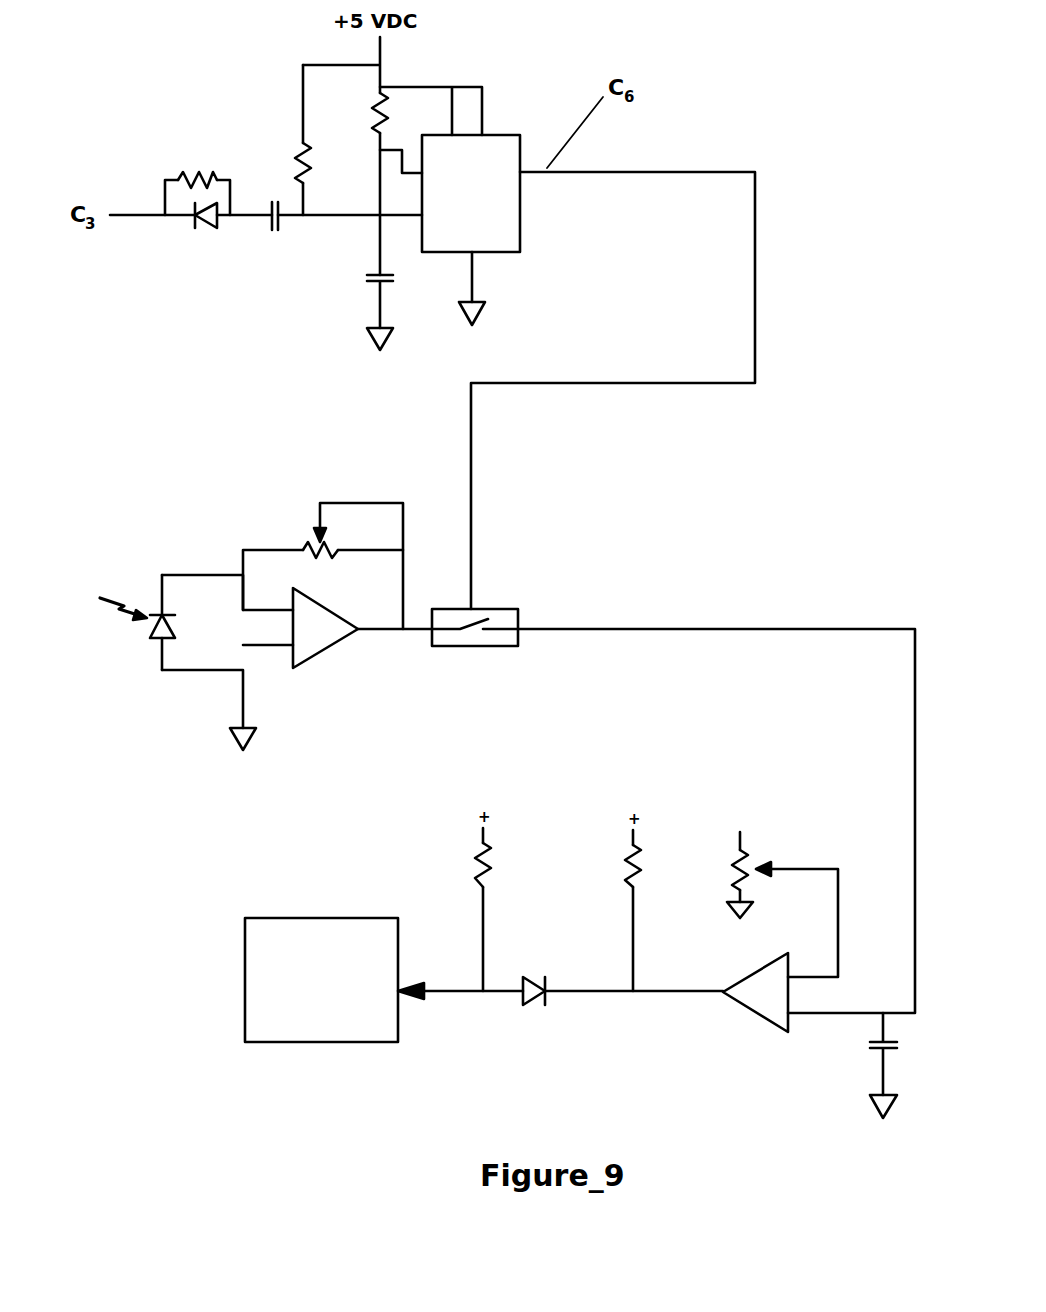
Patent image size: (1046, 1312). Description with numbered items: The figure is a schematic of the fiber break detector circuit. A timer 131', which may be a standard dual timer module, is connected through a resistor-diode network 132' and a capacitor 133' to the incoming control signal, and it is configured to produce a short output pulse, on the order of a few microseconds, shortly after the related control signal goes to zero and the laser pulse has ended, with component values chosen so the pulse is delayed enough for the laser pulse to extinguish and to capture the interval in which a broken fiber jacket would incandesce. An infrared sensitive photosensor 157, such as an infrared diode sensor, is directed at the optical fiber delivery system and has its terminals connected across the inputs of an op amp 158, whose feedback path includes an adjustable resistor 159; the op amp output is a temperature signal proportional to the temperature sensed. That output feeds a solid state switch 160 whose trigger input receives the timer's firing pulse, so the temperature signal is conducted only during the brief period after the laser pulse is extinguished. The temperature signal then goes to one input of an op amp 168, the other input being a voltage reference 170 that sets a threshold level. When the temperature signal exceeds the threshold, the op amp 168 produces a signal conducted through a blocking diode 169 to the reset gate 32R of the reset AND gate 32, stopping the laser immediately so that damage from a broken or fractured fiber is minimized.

The timer 131' is at (488, 176).
The resistor-diode network 132' is at (171, 142).
The capacitor 133' is at (235, 128).
The infrared sensitive photosensor 157 is at (160, 612).
The op amp 158 is at (337, 638).
The variable feedback resistor 159 is at (303, 540).
The solid state switch 160 is at (470, 648).
The reset AND gate 32 is at (290, 922).
The reset gate 32R is at (420, 987).
The op amp 168 is at (752, 998).
The blocking diode 169 is at (532, 1002).
The voltage reference 170 is at (750, 852).